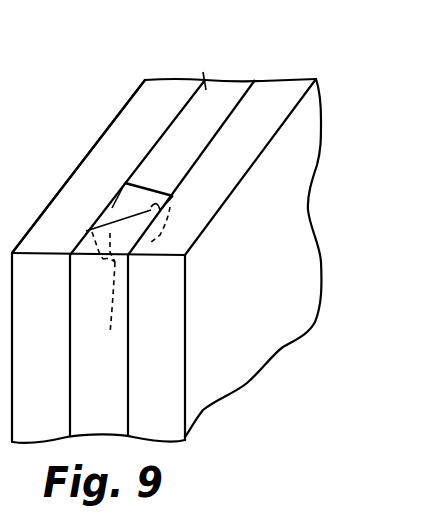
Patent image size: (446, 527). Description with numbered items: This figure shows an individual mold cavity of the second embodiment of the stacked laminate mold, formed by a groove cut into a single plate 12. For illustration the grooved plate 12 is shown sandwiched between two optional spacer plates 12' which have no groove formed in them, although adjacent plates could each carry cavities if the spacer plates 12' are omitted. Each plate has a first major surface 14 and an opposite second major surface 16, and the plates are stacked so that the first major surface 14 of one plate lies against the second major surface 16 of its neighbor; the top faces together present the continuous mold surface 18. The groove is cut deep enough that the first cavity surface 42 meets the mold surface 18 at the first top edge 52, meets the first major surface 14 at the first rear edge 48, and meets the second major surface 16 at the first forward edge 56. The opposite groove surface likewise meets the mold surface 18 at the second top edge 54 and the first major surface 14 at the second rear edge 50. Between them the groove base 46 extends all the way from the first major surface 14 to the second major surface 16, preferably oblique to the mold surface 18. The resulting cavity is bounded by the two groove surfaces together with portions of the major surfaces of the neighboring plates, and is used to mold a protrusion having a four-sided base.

The spacer plate 12' is at (170, 133).
The plate 12 is at (197, 134).
The mold surface 18 is at (204, 76).
The first major surface 14 is at (155, 211).
The second major surface 16 is at (103, 220).
The first cavity surface 42 is at (140, 190).
The groove base 46 is at (109, 311).
The first rear edge 48 is at (118, 205).
The second rear edge 50 is at (103, 259).
The first top edge 52 is at (150, 184).
The second top edge 54 is at (124, 206).
The first forward edge 56 is at (170, 207).